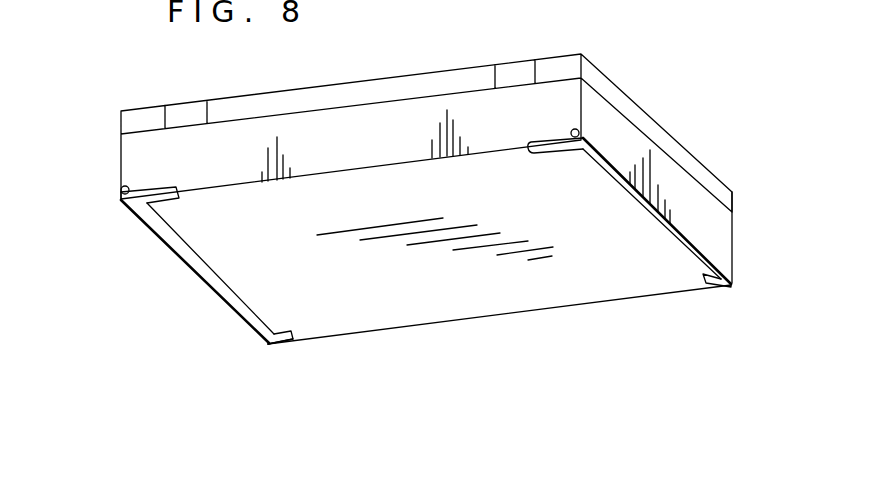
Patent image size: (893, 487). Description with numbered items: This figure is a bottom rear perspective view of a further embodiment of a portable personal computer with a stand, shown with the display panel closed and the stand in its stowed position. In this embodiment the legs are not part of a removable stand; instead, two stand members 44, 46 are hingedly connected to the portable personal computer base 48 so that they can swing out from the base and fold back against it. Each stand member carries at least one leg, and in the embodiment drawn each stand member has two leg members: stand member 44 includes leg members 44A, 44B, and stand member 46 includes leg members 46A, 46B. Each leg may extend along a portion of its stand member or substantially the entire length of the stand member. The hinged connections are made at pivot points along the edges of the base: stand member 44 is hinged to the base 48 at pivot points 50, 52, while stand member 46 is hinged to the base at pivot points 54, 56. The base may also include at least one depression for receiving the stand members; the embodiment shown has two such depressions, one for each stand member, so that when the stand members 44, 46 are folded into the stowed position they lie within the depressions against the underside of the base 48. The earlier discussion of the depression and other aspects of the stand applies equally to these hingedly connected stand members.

The stand member 44 is at (685, 255).
The leg member 44A is at (547, 153).
The leg member 44B is at (718, 288).
The stand member 46 is at (197, 275).
The leg member 46A is at (163, 203).
The leg member 46B is at (290, 333).
The portable personal computer base 48 is at (493, 300).
The pivot point 50 is at (580, 133).
The pivot point 52 is at (733, 274).
The pivot point 54 is at (120, 190).
The pivot point 56 is at (280, 348).